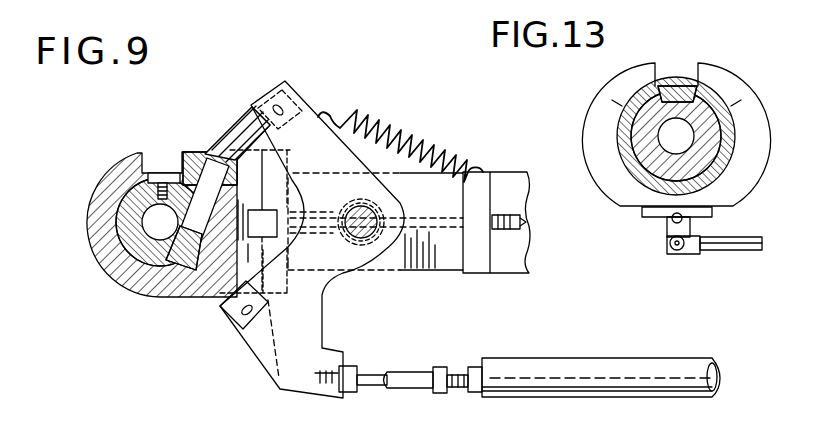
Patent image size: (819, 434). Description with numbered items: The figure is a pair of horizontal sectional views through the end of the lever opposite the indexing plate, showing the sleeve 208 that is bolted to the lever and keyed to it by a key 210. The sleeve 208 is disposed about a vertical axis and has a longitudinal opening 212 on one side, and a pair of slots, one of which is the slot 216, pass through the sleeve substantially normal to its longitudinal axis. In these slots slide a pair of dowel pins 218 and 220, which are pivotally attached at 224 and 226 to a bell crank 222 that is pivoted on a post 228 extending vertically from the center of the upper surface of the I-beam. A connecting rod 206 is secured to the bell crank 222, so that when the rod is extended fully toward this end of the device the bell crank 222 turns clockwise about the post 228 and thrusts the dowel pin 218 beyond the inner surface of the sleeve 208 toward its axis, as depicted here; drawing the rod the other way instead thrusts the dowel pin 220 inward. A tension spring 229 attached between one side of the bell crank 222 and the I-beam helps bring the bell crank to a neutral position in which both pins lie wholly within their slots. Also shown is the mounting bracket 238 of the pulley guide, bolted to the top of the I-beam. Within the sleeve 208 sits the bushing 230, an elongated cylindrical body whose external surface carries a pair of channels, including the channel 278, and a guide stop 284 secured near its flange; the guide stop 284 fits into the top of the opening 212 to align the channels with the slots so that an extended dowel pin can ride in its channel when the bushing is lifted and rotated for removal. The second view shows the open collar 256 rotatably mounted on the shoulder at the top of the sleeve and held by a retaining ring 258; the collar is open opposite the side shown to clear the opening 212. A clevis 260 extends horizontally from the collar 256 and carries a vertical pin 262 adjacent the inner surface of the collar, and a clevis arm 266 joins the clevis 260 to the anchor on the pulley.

In FIG. 9, the connecting rod 206 is at (617, 393).
In FIG. 9, the sleeve 208 is at (88, 221).
In FIG. 9, the key 210 is at (272, 236).
In FIG. 9, the longitudinal opening 212 is at (140, 152).
In FIG. 13, the longitudinal opening 212 is at (655, 63).
In FIG. 9, the slot 216 is at (197, 163).
In FIG. 9, the dowel pin 218 is at (197, 280).
In FIG. 9, the dowel pin 220 is at (233, 140).
In FIG. 9, the bell crank 222 is at (265, 353).
In FIG. 9, the pivotal attachment 224 is at (240, 315).
In FIG. 9, the pivotal attachment 226 is at (277, 110).
In FIG. 9, the post 228 is at (367, 220).
In FIG. 9, the tension spring 229 is at (417, 137).
In FIG. 9, the bushing 230 is at (126, 238).
In FIG. 13, the bushing 230 is at (617, 130).
In FIG. 9, the mounting bracket 238 is at (512, 270).
In FIG. 13, the open collar 256 is at (617, 170).
In FIG. 13, the retaining ring 258 is at (630, 150).
In FIG. 13, the clevis 260 is at (672, 227).
In FIG. 13, the vertical pin 262 is at (693, 218).
In FIG. 13, the clevis arm 266 is at (730, 250).
In FIG. 9, the channel 278 is at (160, 203).
In FIG. 9, the guide stop 284 is at (152, 172).
In FIG. 13, the guide stop 284 is at (688, 84).